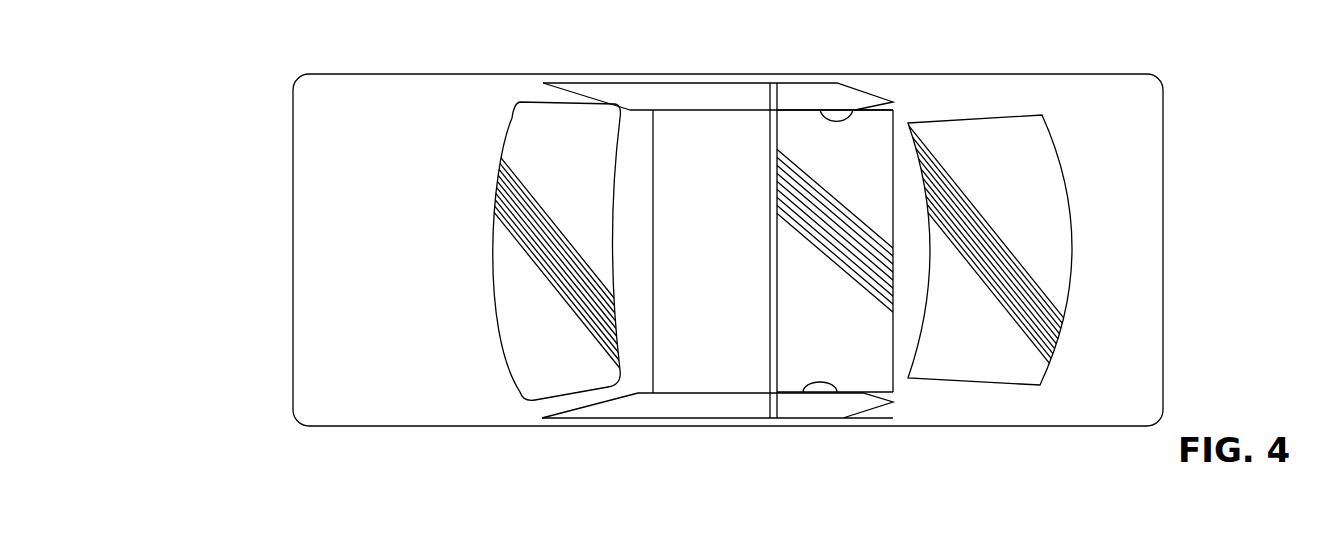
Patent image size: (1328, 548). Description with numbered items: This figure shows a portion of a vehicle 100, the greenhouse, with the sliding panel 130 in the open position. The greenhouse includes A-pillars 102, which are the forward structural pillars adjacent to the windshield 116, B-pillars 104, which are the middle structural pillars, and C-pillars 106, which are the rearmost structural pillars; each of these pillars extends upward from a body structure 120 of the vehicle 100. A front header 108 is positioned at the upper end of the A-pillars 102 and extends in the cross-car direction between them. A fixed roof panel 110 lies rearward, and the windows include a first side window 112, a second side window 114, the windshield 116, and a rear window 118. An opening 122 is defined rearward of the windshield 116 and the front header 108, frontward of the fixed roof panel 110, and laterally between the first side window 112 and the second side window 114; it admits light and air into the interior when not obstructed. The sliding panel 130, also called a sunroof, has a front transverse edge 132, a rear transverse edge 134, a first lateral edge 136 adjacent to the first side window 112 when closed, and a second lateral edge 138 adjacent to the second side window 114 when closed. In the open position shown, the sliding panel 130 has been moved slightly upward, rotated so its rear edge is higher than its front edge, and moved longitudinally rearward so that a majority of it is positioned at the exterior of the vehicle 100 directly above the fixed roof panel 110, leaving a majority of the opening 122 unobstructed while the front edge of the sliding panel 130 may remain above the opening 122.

The vehicle 100 is at (242, 99).
The A-pillars 102 is at (592, 102).
The B-pillars 104 is at (779, 106).
The C-pillars 106 is at (923, 113).
The front header 108 is at (647, 247).
The fixed roof panel 110 is at (927, 254).
The first side window 112 is at (650, 410).
The second side window 114 is at (690, 98).
The windshield 116 is at (538, 130).
The rear window 118 is at (1027, 196).
The body structure 120 is at (1022, 430).
The opening 122 is at (720, 279).
The sliding panel 130 is at (832, 319).
The front transverse edge 132 is at (768, 365).
The rear transverse edge 134 is at (898, 120).
The first lateral edge 136 is at (843, 403).
The second lateral edge 138 is at (857, 110).